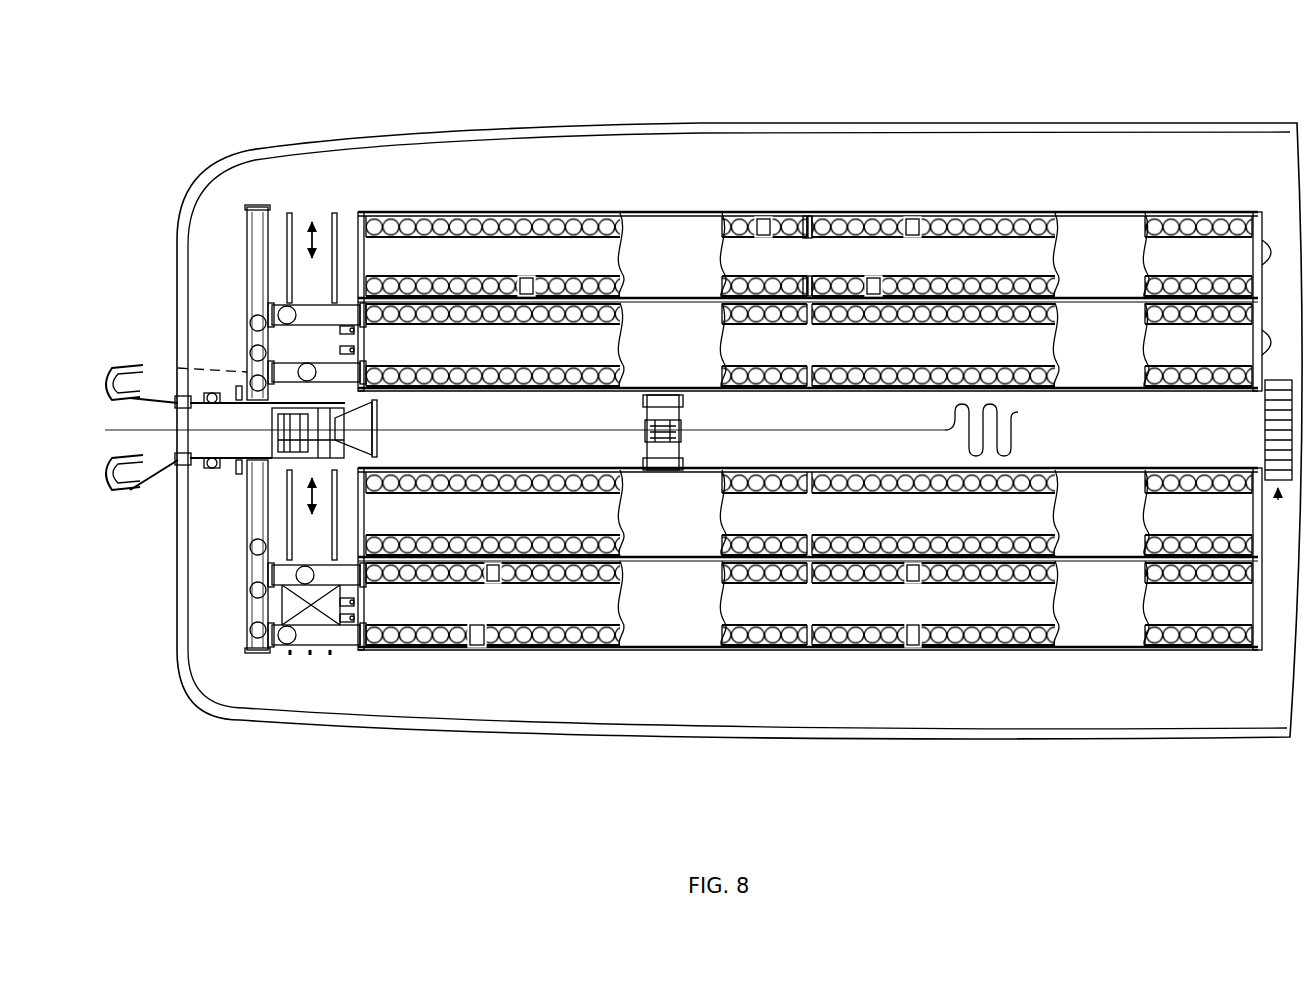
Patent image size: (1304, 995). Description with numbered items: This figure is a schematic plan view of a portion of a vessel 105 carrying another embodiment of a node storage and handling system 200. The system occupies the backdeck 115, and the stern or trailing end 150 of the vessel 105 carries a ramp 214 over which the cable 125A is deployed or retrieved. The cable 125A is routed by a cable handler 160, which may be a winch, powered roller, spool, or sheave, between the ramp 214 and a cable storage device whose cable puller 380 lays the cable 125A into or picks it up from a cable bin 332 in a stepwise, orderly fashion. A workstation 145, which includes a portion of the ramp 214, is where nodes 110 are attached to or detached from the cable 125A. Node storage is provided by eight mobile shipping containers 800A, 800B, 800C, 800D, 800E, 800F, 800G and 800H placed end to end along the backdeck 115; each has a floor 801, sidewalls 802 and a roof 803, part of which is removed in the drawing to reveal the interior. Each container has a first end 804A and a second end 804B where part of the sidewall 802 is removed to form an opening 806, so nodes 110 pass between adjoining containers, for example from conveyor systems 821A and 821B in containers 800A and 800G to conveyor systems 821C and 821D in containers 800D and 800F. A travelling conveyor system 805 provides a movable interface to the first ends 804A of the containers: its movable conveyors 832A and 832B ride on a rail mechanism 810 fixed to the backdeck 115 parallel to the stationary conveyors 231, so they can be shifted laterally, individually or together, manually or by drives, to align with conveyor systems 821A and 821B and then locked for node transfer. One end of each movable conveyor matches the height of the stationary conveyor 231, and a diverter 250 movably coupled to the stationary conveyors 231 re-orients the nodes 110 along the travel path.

The vessel 105 is at (1258, 123).
The node storage and handling system 200 is at (1050, 64).
The trailing end 150 is at (178, 165).
The cable 125A is at (470, 430).
The cable bin 332 is at (1030, 430).
The sidewall 802 is at (445, 210).
The container 800G is at (518, 657).
The roof 803 is at (883, 430).
The floor 801 is at (491, 257).
The backdeck 115 is at (685, 685).
The conveyor system 821A is at (763, 222).
The conveyor system 821B is at (524, 285).
The conveyor system 821C is at (913, 222).
The conveyor system 821D is at (872, 285).
The opening 806 is at (345, 232).
The stationary conveyor 231 is at (252, 207).
The rail mechanism 810 is at (305, 310).
The travelling conveyor system 805 is at (298, 185).
The movable conveyor 832B is at (293, 305).
The movable conveyor 832A is at (360, 363).
The first end 804A is at (360, 210).
The second end 804B is at (806, 215).
The container 800E is at (1142, 462).
The container 800A is at (597, 205).
The container 800B is at (713, 398).
The container 800C is at (835, 398).
The container 800D is at (985, 210).
The container 800F is at (995, 660).
The container 800H is at (698, 468).
The cable handler 160 is at (368, 452).
The cable puller 380 is at (645, 440).
The ramp 214 is at (160, 485).
The workstation 145 is at (210, 383).
The diverter 250 is at (247, 303).
The nodes 110 is at (250, 612).